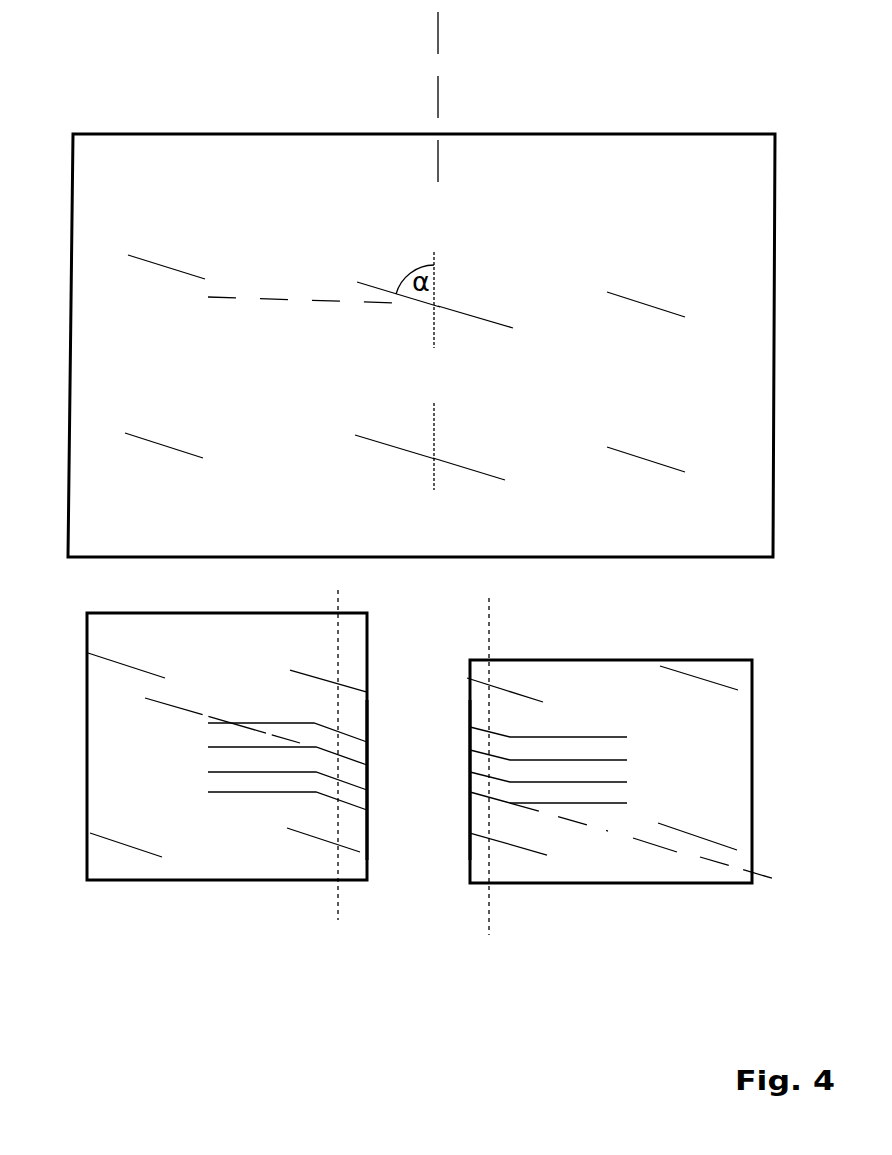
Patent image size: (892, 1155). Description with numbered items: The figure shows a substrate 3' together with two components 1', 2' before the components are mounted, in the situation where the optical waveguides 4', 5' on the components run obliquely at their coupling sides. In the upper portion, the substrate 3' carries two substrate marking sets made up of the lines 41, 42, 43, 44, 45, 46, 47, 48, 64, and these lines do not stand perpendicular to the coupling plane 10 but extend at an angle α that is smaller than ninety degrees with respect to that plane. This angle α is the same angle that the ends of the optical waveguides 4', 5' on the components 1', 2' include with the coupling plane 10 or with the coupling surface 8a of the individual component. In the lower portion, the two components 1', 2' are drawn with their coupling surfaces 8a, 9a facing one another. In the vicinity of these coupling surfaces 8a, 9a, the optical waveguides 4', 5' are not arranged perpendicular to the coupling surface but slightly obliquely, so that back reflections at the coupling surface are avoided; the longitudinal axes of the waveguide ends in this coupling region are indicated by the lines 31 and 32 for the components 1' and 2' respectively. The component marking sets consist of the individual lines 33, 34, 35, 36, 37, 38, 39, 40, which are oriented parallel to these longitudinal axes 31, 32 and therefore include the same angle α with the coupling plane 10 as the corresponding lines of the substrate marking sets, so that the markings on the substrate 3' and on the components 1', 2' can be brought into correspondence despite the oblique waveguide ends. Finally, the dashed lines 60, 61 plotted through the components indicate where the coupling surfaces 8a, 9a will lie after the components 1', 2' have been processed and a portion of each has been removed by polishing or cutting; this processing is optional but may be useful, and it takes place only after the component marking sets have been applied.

The substrate 3' is at (459, 345).
The coupling plane 10 is at (438, 82).
The substrate marking set line 64 is at (436, 330).
The substrate marking set line 41 is at (382, 445).
The substrate marking set line 42 is at (154, 445).
The substrate marking set line 43 is at (152, 263).
The substrate marking set line 44 is at (388, 284).
The substrate marking set line 45 is at (473, 470).
The substrate marking set line 46 is at (483, 315).
The substrate marking set line 47 is at (672, 311).
The substrate marking set line 48 is at (660, 461).
The component 1' is at (227, 808).
The component 2' is at (611, 835).
The coupling surface 8a is at (368, 820).
The coupling surface 9a is at (469, 845).
The dashed line 60 is at (345, 915).
The dashed line 61 is at (495, 925).
The longitudinal axis 31 is at (190, 712).
The longitudinal axis 32 is at (655, 845).
The component marking set line 33 is at (310, 837).
The component marking set line 34 is at (125, 848).
The component marking set line 35 is at (118, 663).
The component marking set line 36 is at (318, 672).
The component marking set line 37 is at (519, 848).
The component marking set line 38 is at (518, 690).
The component marking set line 39 is at (710, 680).
The component marking set line 40 is at (720, 837).
The optical waveguide 4' is at (287, 813).
The optical waveguide 5' is at (272, 781).